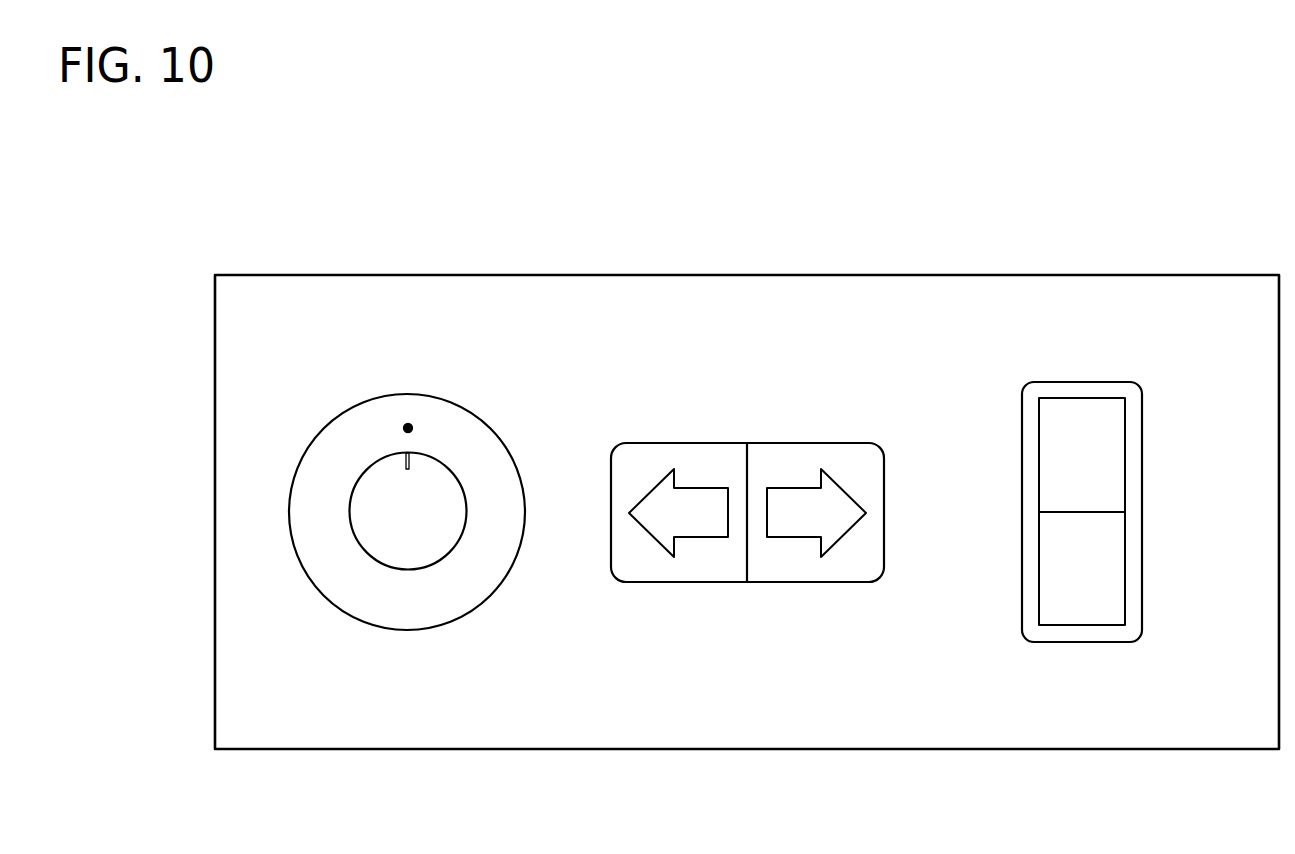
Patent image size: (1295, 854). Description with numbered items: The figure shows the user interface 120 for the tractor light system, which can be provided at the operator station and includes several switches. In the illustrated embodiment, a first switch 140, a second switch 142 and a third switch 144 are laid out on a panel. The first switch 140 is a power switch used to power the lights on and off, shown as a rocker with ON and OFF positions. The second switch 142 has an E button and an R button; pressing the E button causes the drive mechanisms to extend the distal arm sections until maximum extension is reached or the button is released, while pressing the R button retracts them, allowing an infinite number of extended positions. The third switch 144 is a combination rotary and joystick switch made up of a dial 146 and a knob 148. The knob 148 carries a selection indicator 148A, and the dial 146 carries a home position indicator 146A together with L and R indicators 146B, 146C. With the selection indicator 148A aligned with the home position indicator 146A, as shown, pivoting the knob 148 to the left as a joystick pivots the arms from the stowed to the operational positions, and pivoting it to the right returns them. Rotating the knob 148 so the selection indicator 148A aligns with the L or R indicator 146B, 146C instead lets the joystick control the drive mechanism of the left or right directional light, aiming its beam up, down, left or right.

The user interface 120 is at (1224, 131).
The first switch 140 is at (1083, 398).
The second switch 142 is at (800, 442).
The third switch 144 is at (445, 397).
The dial 146 is at (483, 585).
The home position indicator 146A is at (408, 428).
The L indicator 146B is at (337, 448).
The R indicator 146C is at (468, 433).
The knob 148 is at (405, 529).
The selection indicator 148A is at (408, 469).